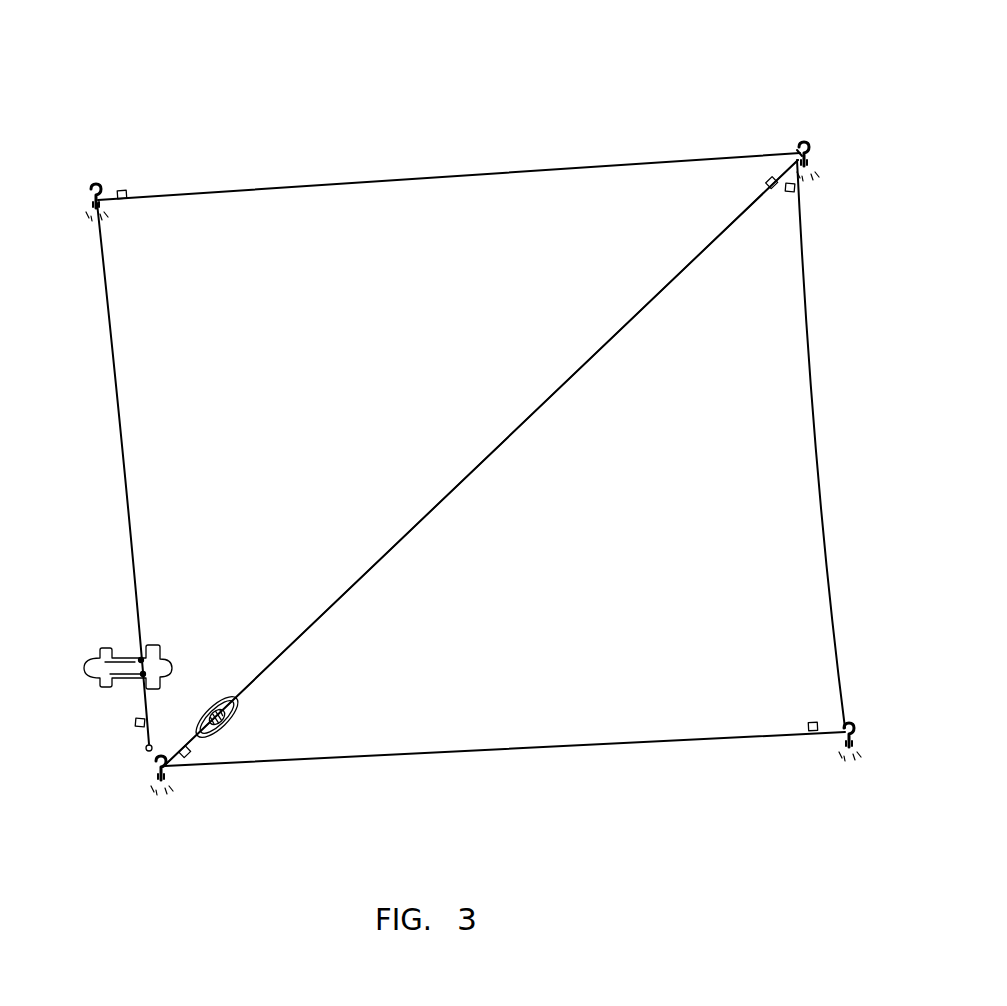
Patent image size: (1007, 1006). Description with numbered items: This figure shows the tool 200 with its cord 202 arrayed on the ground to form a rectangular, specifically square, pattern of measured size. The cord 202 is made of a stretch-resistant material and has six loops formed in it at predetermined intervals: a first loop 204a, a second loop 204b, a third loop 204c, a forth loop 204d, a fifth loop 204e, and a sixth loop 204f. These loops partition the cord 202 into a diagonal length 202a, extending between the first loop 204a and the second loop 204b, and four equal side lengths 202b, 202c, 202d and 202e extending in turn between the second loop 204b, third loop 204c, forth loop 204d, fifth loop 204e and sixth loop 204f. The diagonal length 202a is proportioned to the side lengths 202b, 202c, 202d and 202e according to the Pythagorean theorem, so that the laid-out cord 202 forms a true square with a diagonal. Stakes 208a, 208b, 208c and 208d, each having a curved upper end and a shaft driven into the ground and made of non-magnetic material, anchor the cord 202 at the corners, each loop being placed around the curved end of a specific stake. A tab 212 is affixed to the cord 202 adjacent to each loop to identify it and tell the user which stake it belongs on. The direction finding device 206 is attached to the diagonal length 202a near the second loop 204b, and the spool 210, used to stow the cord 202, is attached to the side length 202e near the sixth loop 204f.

The tool 200 is at (688, 106).
The cord 202 is at (540, 410).
The diagonal length 202a is at (413, 525).
The side length 202b is at (495, 750).
The side length 202c is at (818, 426).
The side length 202d is at (400, 178).
The side length 202e is at (124, 452).
The first loop 204a is at (808, 163).
The second loop 204b is at (155, 768).
The third loop 204c is at (856, 748).
The forth loop 204d is at (796, 152).
The fifth loop 204e is at (90, 208).
The sixth loop 204f is at (146, 746).
The direction finding device 206 is at (240, 707).
The stake 208a is at (806, 143).
The stake 208b is at (167, 772).
The stake 208c is at (853, 724).
The stake 208d is at (100, 190).
The spool 210 is at (133, 656).
The tab 212 is at (126, 192).